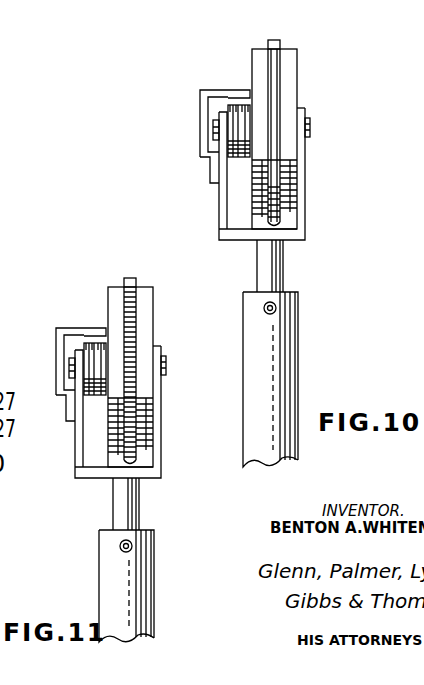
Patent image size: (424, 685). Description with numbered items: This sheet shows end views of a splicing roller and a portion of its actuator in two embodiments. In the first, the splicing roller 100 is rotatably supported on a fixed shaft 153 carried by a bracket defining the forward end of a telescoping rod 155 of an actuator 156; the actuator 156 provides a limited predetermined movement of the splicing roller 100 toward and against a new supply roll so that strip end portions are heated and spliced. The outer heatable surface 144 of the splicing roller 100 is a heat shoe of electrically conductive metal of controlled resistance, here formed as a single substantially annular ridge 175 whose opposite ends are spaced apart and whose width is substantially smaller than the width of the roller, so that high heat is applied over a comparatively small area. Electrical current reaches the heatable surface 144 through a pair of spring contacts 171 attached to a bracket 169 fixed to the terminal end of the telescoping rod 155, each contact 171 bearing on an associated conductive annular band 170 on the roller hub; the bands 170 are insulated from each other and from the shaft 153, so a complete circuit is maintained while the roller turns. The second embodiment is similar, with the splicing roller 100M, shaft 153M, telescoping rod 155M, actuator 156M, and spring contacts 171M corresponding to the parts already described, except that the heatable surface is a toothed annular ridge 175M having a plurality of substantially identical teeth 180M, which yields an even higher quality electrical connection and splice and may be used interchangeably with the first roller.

In FIG. 10, the splicing roller 100 is at (297, 75).
In FIG. 10, the outer heatable surface 144 is at (294, 48).
In FIG. 10, the annular ridge 175 is at (276, 39).
In FIG. 10, the bracket 169 is at (209, 101).
In FIG. 10, the annular bands 170 is at (245, 150).
In FIG. 10, the spring contacts 171 is at (248, 105).
In FIG. 10, the shaft 153 is at (311, 128).
In FIG. 10, the telescoping rod 155 is at (281, 270).
In FIG. 10, the actuator 156 is at (298, 328).
In FIG. 11, the splicing roller 100M is at (152, 330).
In FIG. 11, the toothed annular ridge 175M is at (133, 277).
In FIG. 11, the spring contacts 171M is at (106, 343).
In FIG. 11, the teeth 180M is at (131, 297).
In FIG. 11, the shaft 153M is at (166, 366).
In FIG. 11, the telescoping rod 155M is at (137, 505).
In FIG. 11, the actuator 156M is at (152, 552).